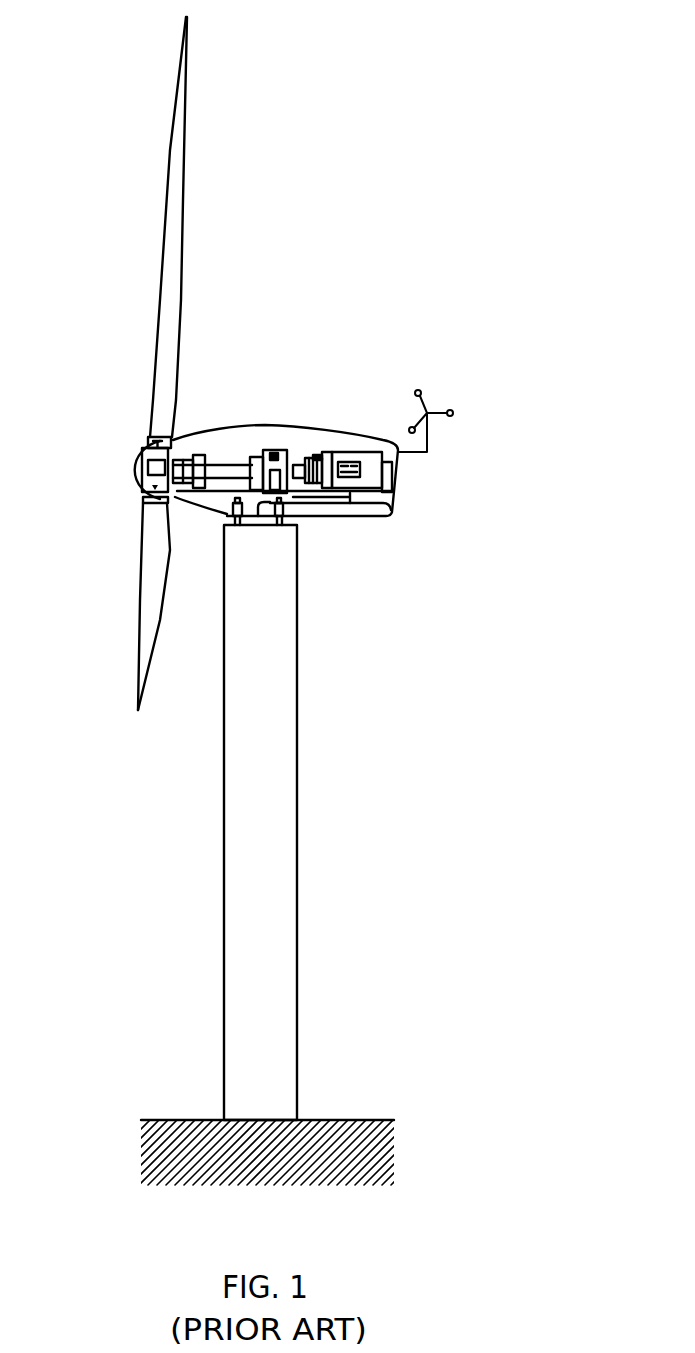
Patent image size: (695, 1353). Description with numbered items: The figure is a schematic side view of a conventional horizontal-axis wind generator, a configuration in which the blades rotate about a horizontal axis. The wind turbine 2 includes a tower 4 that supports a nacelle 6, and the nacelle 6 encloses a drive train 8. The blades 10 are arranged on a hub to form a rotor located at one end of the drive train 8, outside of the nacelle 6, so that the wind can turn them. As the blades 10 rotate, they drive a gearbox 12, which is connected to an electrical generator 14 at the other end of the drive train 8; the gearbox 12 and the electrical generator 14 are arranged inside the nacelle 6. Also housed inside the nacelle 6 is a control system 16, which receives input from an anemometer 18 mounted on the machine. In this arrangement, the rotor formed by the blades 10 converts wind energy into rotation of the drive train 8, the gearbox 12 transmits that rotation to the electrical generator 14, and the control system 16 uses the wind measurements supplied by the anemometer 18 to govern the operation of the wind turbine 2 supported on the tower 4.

The wind turbine 2 is at (492, 221).
The tower 4 is at (277, 615).
The nacelle 6 is at (450, 476).
The drive train 8 is at (213, 463).
The blades 10 is at (163, 297).
The gearbox 12 is at (275, 457).
The electrical generator 14 is at (358, 460).
The control system 16 is at (314, 452).
The anemometer 18 is at (437, 403).